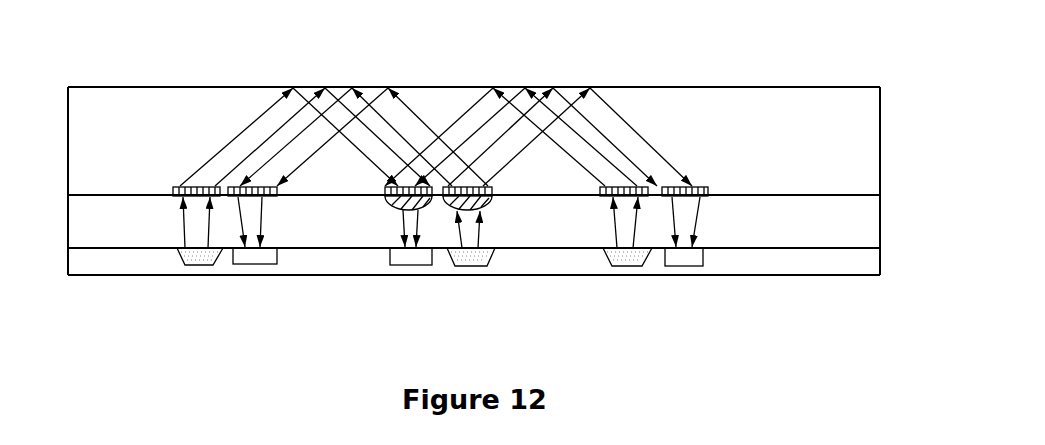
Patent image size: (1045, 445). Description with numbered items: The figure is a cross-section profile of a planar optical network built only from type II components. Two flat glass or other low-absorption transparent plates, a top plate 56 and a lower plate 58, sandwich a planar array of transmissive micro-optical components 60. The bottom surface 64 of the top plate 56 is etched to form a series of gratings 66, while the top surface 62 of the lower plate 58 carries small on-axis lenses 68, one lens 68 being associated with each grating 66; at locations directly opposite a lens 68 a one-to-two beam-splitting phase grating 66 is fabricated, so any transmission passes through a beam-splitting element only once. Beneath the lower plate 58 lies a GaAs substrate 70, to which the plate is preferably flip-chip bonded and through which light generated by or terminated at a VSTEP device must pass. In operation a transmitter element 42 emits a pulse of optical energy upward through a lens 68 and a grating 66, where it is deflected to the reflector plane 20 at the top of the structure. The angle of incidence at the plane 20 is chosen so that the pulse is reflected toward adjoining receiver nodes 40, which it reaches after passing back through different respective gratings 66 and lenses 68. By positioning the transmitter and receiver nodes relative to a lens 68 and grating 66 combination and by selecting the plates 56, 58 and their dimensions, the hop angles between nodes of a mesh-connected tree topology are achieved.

The reflector plane 20 is at (727, 87).
The top plate 56 is at (67, 142).
The bottom surface of the top plate 64 is at (87, 195).
The lower plate 58 is at (67, 232).
The planar array of transmissive micro-optical components 60 is at (792, 195).
The top surface of the lower plate 62 is at (817, 197).
The GaAs substrate 70 is at (564, 275).
The transmitter element 42 is at (630, 266).
The receiver node 40 is at (690, 266).
The grating 66 is at (600, 187).
The lens 68 is at (388, 203).